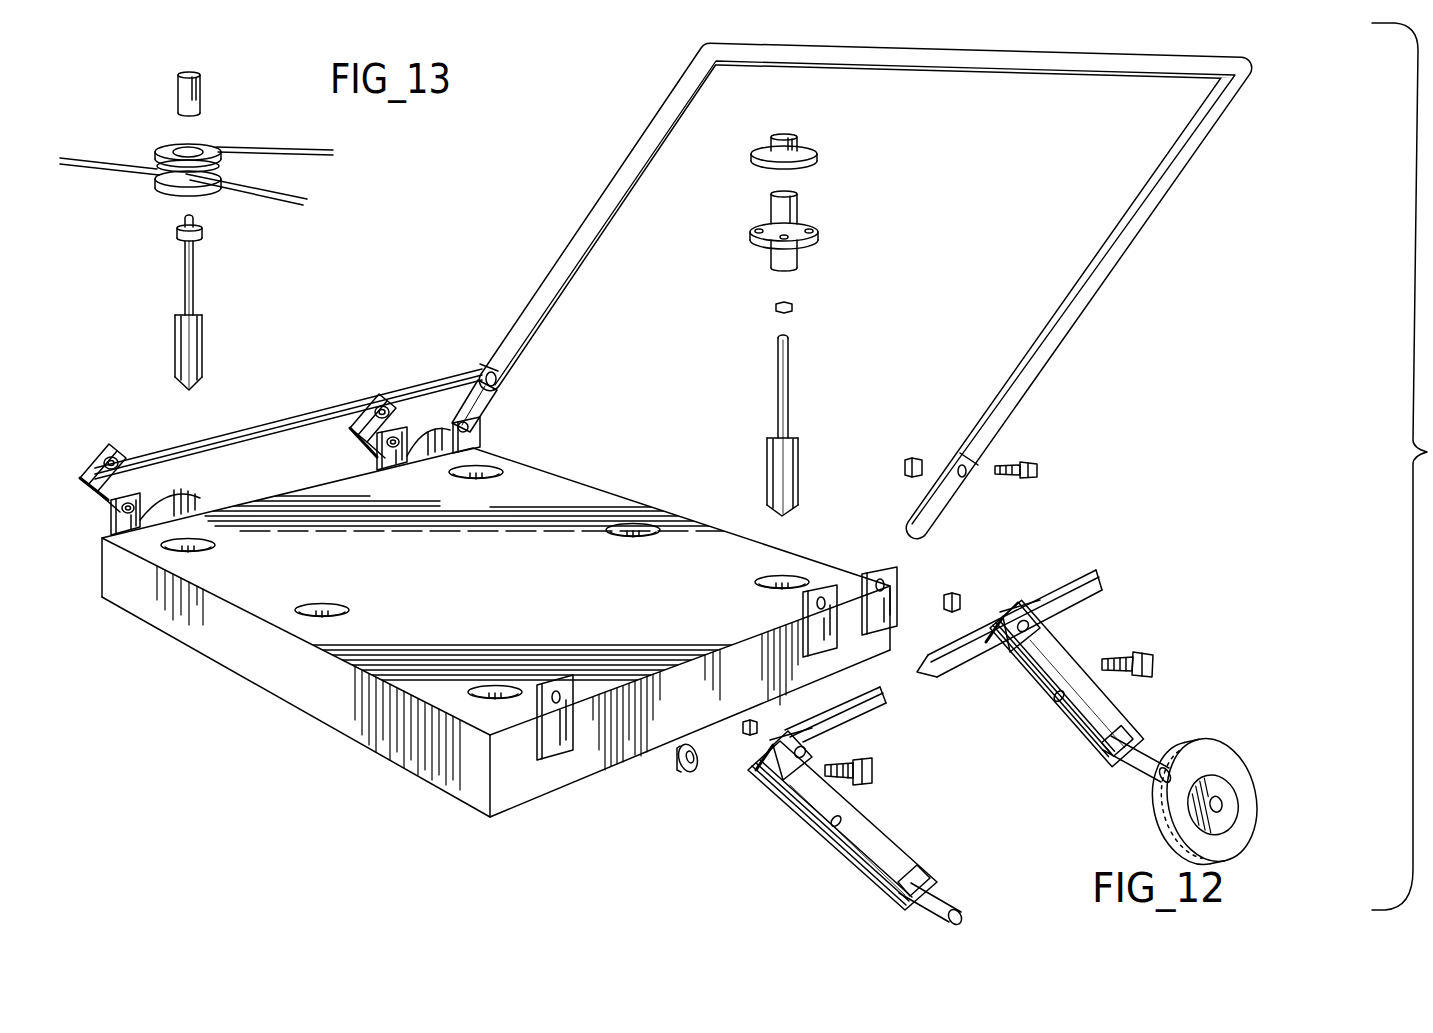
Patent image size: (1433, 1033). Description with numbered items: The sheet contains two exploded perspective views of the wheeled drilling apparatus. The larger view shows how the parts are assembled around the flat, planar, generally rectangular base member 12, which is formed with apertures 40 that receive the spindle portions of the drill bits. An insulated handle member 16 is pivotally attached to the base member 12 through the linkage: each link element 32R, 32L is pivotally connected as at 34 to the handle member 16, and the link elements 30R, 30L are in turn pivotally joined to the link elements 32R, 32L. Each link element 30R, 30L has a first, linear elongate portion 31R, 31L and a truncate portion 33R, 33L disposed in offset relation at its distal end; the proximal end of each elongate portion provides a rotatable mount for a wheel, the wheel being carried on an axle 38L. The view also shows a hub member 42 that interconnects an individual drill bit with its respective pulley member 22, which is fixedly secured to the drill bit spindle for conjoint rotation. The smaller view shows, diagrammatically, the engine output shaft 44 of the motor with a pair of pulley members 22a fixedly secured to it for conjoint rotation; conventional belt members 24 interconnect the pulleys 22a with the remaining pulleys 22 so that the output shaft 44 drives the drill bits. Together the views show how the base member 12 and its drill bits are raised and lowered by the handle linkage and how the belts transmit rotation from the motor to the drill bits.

In FIG. 12, the base member 12 is at (472, 637).
In FIG. 12, the handle member 16 is at (612, 222).
In FIG. 12, the pulley member 22 is at (750, 152).
In FIG. 13, the pulley members 22a is at (173, 140).
In FIG. 13, the belt members 24 is at (113, 168).
In FIG. 12, the link element 30R is at (115, 526).
In FIG. 12, the link element 30L is at (1055, 722).
In FIG. 12, the elongate portion 31R is at (137, 492).
In FIG. 12, the elongate portion 31L is at (1097, 714).
In FIG. 12, the link element 32R is at (296, 412).
In FIG. 12, the link element 32L is at (950, 677).
In FIG. 12, the truncate offset portion 33R is at (113, 428).
In FIG. 12, the truncate offset portion 33L is at (1023, 584).
In FIG. 12, the pivotal connection 34 is at (478, 370).
In FIG. 12, the axle 38L is at (1120, 770).
In FIG. 12, the apertures 40 is at (343, 580).
In FIG. 12, the hub member 42 is at (810, 224).
In FIG. 13, the engine output shaft 44 is at (249, 64).